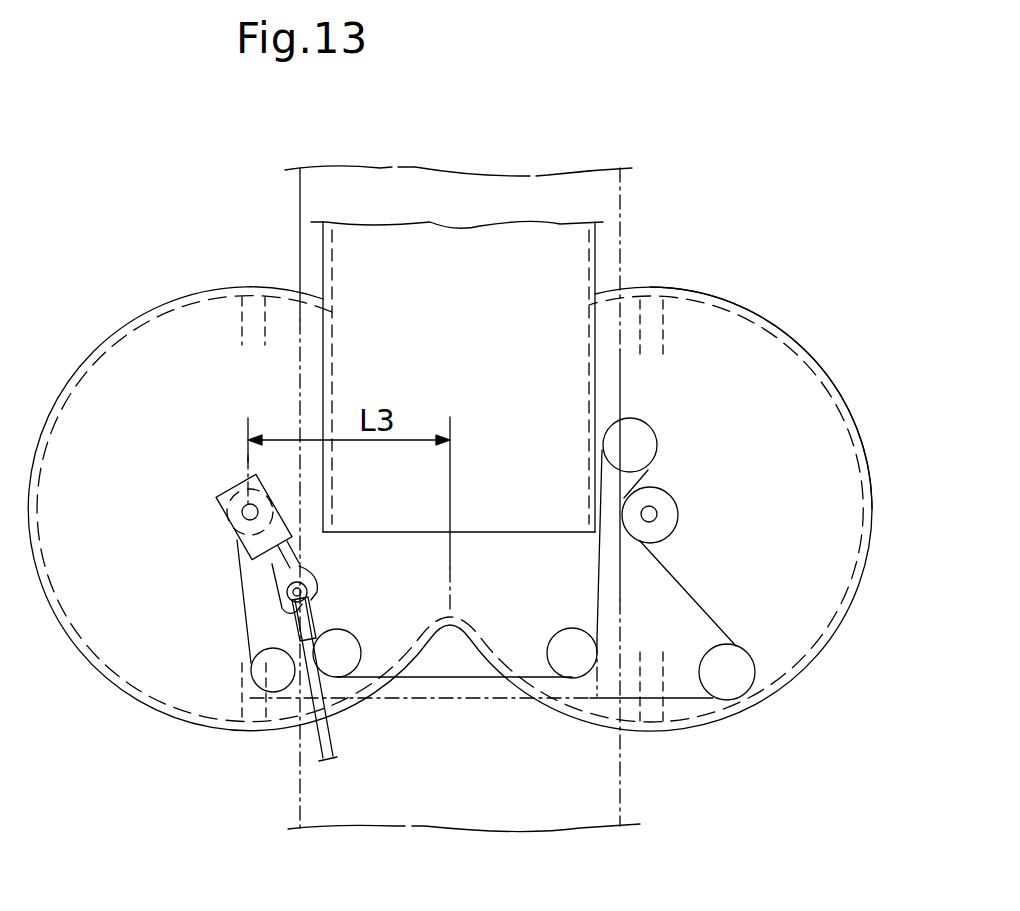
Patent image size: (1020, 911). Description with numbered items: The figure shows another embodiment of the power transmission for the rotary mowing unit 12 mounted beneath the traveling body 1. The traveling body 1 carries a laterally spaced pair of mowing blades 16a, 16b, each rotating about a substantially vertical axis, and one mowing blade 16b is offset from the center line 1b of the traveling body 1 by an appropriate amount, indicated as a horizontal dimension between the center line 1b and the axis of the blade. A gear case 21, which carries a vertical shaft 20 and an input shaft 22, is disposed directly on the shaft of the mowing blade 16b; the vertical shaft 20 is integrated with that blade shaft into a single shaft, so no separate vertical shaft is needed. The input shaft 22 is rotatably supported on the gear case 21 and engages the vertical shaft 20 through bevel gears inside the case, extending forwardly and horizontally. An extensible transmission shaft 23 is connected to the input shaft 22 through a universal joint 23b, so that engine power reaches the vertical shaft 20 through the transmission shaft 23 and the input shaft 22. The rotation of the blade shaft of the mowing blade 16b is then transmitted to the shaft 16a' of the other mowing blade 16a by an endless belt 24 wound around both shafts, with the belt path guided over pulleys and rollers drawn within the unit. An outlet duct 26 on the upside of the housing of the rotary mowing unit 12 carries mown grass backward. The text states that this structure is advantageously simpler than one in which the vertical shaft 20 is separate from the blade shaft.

The traveling body 1 is at (573, 169).
The center line of the traveling body 1b is at (450, 425).
The rotary mowing unit 12 is at (838, 392).
The mowing blade 16a is at (731, 488).
The shaft of the mowing blade 16a' is at (721, 525).
The mowing blade 16b is at (250, 332).
The vertical shaft 20 is at (220, 493).
The gear case 21 is at (233, 543).
The input shaft 22 is at (270, 543).
The extensible transmission shaft 23 is at (330, 732).
The universal joint 23b is at (312, 586).
The endless belt 24 is at (688, 704).
The outlet duct 26 is at (538, 273).